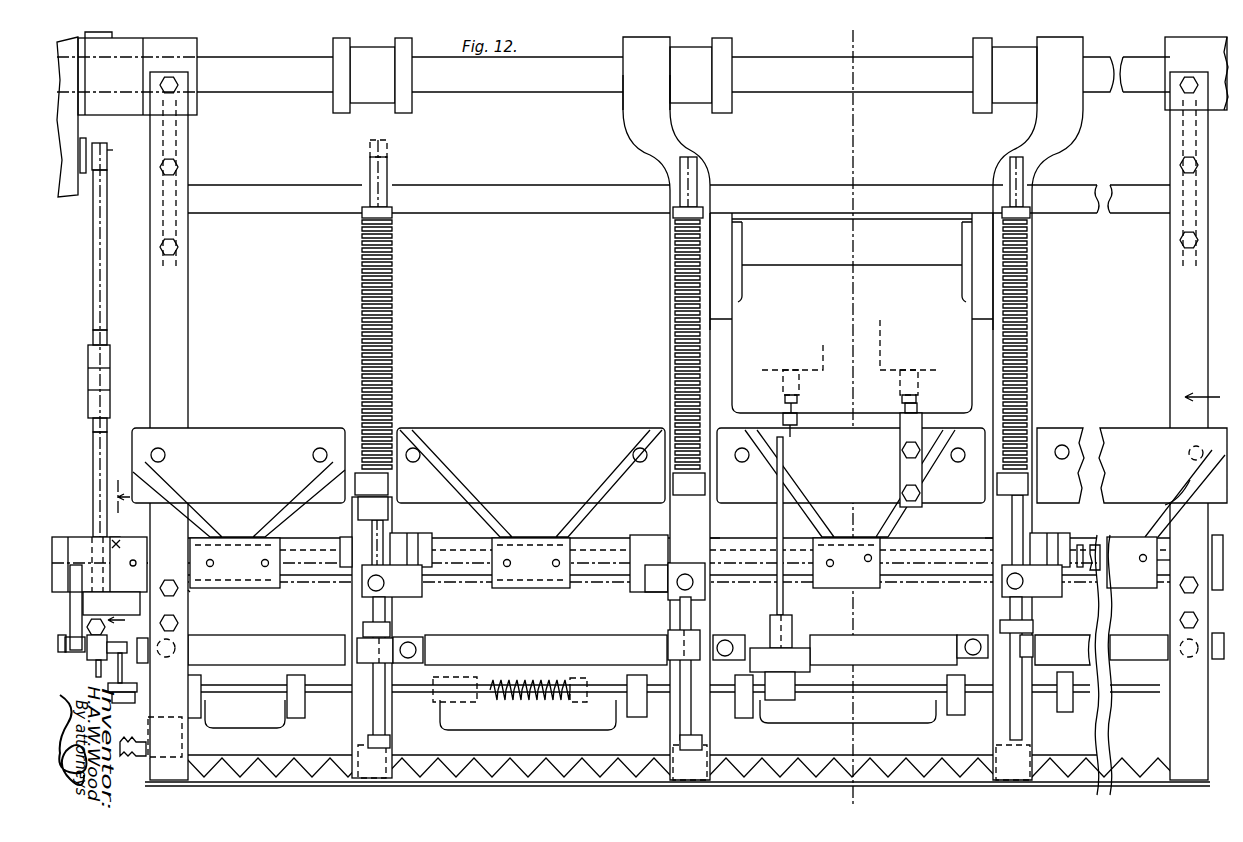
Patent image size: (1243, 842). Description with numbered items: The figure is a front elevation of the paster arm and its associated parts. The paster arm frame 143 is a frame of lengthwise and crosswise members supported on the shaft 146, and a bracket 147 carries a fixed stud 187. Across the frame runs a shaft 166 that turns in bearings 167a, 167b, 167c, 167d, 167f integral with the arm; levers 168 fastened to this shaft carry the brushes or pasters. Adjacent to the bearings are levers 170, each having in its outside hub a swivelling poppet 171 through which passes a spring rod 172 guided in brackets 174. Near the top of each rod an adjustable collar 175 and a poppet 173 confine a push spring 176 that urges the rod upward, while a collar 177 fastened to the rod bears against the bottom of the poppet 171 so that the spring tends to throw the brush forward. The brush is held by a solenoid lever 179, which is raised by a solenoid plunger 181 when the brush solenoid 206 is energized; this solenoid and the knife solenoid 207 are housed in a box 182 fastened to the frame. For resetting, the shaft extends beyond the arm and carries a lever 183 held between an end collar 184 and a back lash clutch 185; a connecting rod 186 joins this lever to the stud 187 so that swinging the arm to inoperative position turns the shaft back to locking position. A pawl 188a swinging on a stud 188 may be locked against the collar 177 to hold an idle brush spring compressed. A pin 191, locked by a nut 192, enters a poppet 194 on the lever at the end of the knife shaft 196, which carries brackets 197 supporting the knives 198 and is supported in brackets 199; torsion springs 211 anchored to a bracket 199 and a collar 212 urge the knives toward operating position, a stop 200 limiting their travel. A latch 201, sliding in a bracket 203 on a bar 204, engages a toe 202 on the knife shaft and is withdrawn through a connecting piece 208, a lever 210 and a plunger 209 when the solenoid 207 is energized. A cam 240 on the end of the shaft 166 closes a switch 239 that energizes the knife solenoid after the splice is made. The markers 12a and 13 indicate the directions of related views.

The section line 12a is at (121, 546).
The section line for Fig. 13 is at (1200, 391).
The paster arm frame 143 is at (182, 343).
The shaft 146 is at (522, 92).
The bracket 147 is at (70, 128).
The shaft 166 is at (478, 580).
The bearing 167a is at (190, 590).
The bearing 167b is at (345, 538).
The bearing 167c is at (714, 538).
The bearing 167d is at (990, 538).
The bearing 167f is at (1150, 590).
The lever 168 is at (318, 480).
The lever 170 is at (428, 537).
The poppet 171 is at (368, 583).
The spring rod 172 is at (383, 166).
The poppet 173 is at (390, 485).
The bracket 174 is at (363, 645).
The collar 175 is at (392, 218).
The push spring 176 is at (393, 258).
The collar 177 is at (404, 624).
The solenoid lever 179 is at (918, 417).
The solenoid plunger 181 is at (917, 384).
The box 182 is at (960, 350).
The lever 183 is at (84, 610).
The end collar 184 is at (60, 537).
The back lash clutch 185 is at (128, 537).
The connecting rod 186 is at (93, 462).
The stud 187 is at (108, 160).
The stud 188 is at (392, 742).
The pawl 188a is at (386, 604).
The pin 191 is at (96, 676).
The nut 192 is at (104, 627).
The poppet 194 is at (88, 655).
The shaft 196 is at (258, 683).
The bracket 197 is at (205, 710).
The knife 198 is at (262, 760).
The bracket 199 is at (170, 672).
The stop 200 is at (182, 735).
The latch 201 is at (810, 655).
The toe 202 is at (795, 695).
The bracket 203 is at (792, 622).
The bar 204 is at (275, 636).
The brush solenoid 206 is at (880, 350).
The knife solenoid 207 is at (823, 349).
The connecting piece 208 is at (784, 460).
The plunger 209 is at (800, 383).
The lever 210 is at (800, 430).
The torsion spring 211 is at (525, 700).
The collar 212 is at (578, 702).
The switch 239 is at (1168, 500).
The cam 240 is at (1212, 560).